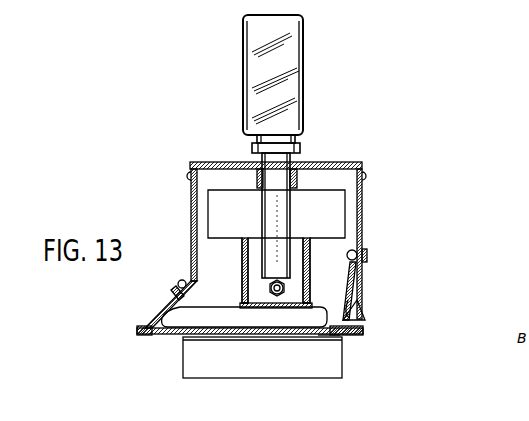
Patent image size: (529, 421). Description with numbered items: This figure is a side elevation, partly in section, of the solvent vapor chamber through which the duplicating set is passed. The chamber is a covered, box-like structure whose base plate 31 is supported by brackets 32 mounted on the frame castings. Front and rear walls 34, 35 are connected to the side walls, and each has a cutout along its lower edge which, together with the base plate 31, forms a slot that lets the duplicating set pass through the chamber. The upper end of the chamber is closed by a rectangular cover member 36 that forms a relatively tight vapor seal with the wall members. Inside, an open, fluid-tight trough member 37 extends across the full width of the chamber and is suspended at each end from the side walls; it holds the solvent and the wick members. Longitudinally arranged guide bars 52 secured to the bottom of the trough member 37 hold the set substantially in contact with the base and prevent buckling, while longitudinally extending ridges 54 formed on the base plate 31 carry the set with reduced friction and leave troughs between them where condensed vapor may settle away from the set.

The base plate 31 is at (229, 349).
The brackets 32 is at (241, 374).
The front wall 34 is at (380, 244).
The rear wall 35 is at (162, 245).
The cover member 36 is at (289, 148).
The trough member 37 is at (236, 249).
The guide bars 52 is at (200, 315).
The ridges 54 is at (354, 353).